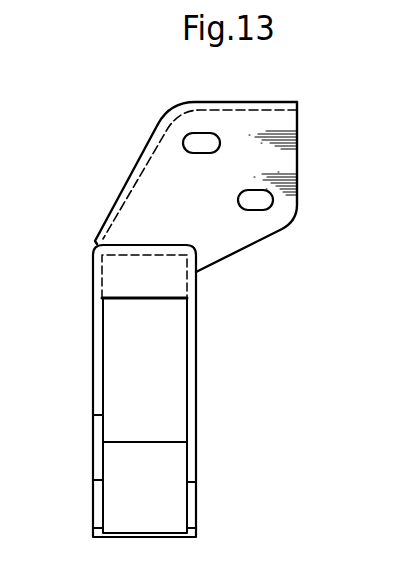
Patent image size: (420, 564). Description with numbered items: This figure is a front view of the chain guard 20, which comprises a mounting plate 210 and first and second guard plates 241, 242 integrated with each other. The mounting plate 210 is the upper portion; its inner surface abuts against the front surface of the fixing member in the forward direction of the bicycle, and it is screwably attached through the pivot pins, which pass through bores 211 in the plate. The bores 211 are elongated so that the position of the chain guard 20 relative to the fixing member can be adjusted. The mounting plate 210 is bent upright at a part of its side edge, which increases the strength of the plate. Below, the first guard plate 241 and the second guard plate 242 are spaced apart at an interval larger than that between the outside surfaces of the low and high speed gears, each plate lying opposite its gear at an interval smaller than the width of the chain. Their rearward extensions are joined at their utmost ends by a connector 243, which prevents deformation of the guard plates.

The chain guard 20 is at (231, 260).
The mounting plate 210 is at (287, 161).
The bores 211 is at (265, 199).
The first guard plate 241 is at (190, 391).
The second guard plate 242 is at (98, 373).
The connector 243 is at (167, 462).